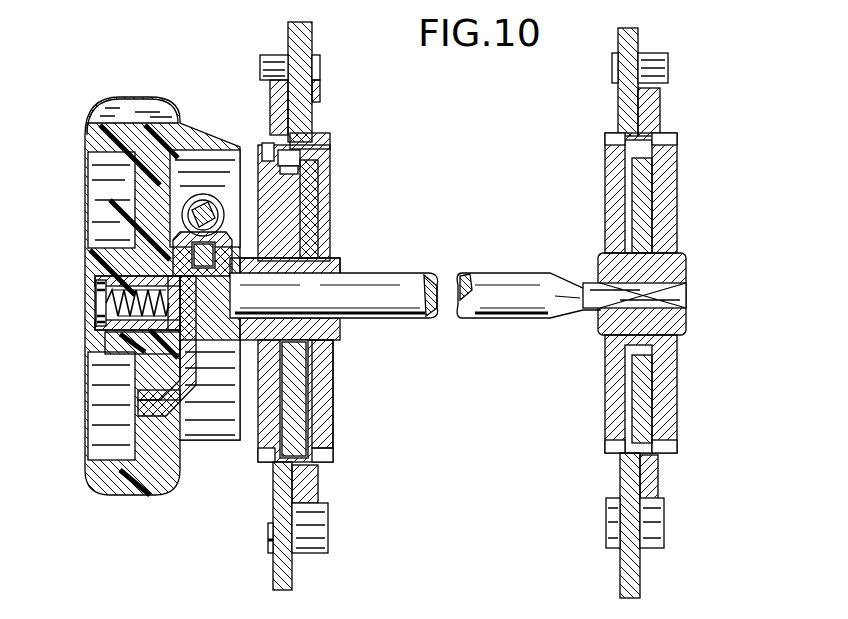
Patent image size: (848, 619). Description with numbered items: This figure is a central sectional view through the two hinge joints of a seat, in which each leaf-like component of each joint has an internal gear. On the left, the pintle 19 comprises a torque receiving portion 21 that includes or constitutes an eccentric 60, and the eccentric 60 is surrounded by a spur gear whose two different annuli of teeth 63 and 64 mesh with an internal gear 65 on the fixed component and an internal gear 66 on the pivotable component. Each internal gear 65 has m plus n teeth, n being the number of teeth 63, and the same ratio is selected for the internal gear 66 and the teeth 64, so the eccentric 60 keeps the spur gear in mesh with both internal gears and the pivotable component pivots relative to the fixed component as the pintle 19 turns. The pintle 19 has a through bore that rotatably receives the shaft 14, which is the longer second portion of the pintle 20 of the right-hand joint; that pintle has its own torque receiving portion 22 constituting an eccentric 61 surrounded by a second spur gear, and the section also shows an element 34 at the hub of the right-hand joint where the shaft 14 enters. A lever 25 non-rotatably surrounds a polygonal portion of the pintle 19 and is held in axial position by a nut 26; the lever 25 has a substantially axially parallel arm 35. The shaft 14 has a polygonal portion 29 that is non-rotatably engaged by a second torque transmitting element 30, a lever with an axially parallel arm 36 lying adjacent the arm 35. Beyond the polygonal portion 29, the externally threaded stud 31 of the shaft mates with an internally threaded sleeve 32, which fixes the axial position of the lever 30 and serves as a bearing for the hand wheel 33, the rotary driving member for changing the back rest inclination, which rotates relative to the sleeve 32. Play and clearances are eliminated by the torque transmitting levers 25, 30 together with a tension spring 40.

The shaft 14 is at (412, 272).
The pintle 19 is at (342, 262).
The pintle 20 is at (680, 252).
The torque receiving portion 21 is at (312, 250).
The torque receiving portion 22 is at (646, 250).
The lever 25 is at (236, 240).
The nut 26 is at (190, 248).
The polygonal portion 29 is at (140, 368).
The second torque transmitting element 30 is at (180, 260).
The stud 31 is at (106, 312).
The sleeve 32 is at (98, 284).
The hand wheel 33 is at (132, 112).
The hub 34 is at (658, 300).
The arm 35 is at (150, 418).
The arm 36 is at (138, 398).
The tension spring 40 is at (203, 212).
The eccentric 60 is at (296, 352).
The eccentric 61 is at (642, 340).
The teeth 63 is at (278, 154).
The teeth 64 is at (333, 160).
The internal gear 65 is at (268, 142).
The internal gear 66 is at (312, 132).